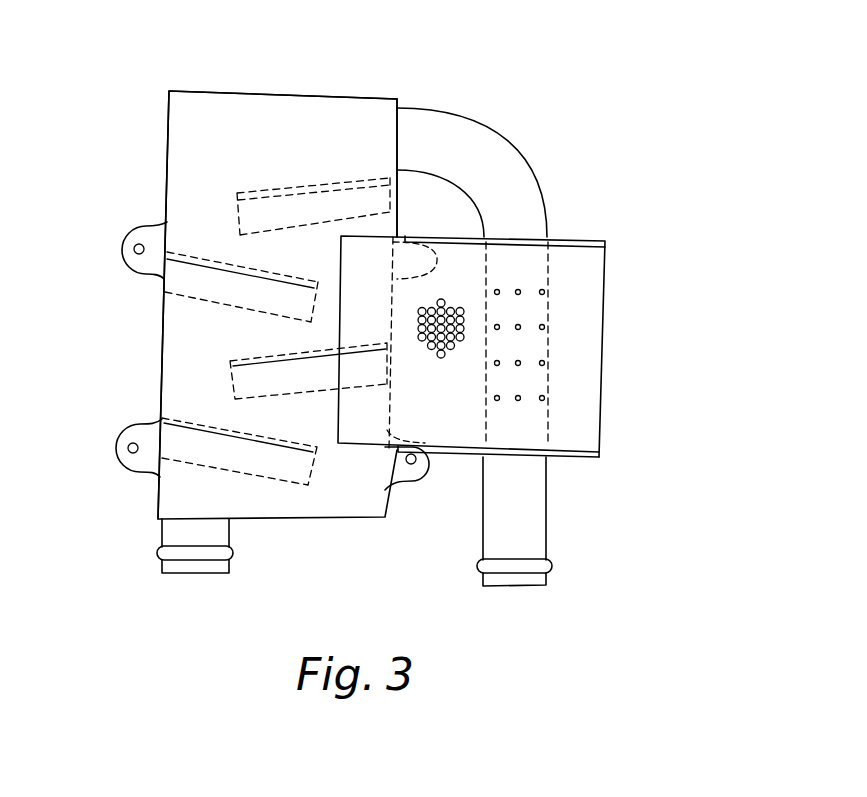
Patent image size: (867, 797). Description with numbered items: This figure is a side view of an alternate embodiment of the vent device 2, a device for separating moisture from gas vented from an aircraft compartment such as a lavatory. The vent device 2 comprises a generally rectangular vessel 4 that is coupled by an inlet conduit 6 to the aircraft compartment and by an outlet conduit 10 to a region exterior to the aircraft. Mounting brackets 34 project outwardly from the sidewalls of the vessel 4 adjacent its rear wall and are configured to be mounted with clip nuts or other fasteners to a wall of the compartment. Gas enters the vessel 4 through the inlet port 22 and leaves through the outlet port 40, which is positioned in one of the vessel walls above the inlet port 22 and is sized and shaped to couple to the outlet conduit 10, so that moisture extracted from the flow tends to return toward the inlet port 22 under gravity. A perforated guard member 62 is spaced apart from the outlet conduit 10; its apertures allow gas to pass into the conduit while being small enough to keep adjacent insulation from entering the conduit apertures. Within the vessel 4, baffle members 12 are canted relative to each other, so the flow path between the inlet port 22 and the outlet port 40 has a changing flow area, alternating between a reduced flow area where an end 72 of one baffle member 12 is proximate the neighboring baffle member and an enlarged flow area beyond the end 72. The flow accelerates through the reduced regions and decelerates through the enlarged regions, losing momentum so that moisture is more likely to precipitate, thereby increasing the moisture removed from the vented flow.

The vent device 2 is at (170, 77).
The vessel 4 is at (230, 92).
The inlet conduit 6 is at (161, 533).
The outlet conduit 10 is at (503, 153).
The baffle members 12 is at (237, 222).
The inlet port 22 is at (203, 503).
The mounting brackets 34 is at (122, 250).
The outlet port 40 is at (368, 140).
The guard member 62 is at (644, 256).
The end of baffle member 72 is at (232, 367).